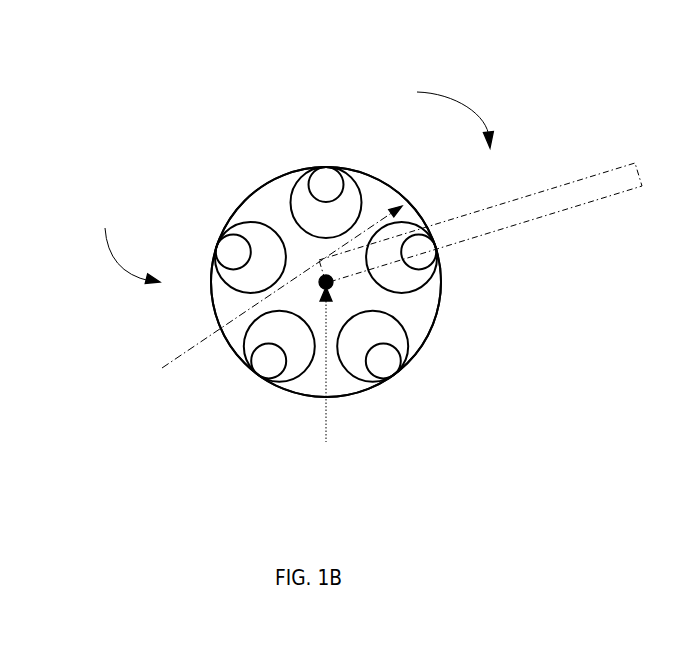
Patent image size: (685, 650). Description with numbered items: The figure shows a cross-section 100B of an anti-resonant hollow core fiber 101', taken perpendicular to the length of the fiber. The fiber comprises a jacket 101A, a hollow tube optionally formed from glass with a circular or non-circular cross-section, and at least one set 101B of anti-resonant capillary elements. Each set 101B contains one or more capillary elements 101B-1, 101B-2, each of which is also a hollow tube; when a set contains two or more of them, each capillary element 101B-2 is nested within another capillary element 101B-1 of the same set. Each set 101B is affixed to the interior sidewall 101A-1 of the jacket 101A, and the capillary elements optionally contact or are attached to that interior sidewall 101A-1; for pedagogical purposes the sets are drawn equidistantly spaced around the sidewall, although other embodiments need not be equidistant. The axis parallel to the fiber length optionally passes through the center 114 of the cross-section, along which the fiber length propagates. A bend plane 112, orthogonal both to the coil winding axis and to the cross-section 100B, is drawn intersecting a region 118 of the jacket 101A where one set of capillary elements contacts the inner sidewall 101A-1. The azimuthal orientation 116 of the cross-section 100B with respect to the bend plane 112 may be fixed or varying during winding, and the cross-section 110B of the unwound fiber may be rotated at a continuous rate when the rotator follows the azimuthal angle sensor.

The cross-section 100B is at (360, 26).
The anti-resonant hollow core fiber 101' is at (255, 228).
The jacket 101A is at (428, 341).
The interior sidewall 101A-1 is at (246, 299).
The set of anti-resonant capillary elements 101B is at (413, 291).
The capillary element 101B-1 is at (289, 178).
The capillary element 101B-2 is at (357, 203).
The cross-section 110B is at (117, 246).
The bend plane 112 is at (518, 196).
The center 114 is at (336, 389).
The azimuthal orientation 116 is at (465, 103).
The region 118 is at (436, 252).